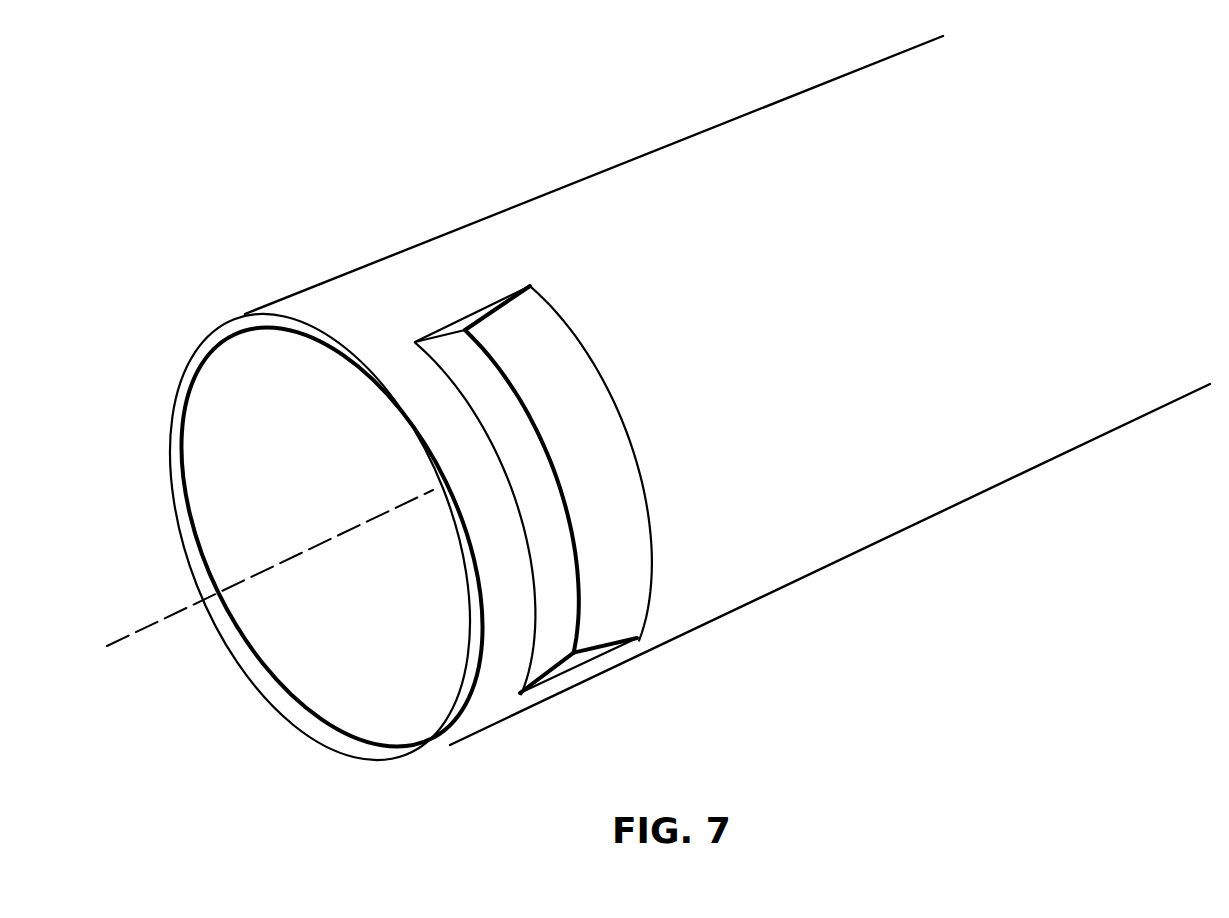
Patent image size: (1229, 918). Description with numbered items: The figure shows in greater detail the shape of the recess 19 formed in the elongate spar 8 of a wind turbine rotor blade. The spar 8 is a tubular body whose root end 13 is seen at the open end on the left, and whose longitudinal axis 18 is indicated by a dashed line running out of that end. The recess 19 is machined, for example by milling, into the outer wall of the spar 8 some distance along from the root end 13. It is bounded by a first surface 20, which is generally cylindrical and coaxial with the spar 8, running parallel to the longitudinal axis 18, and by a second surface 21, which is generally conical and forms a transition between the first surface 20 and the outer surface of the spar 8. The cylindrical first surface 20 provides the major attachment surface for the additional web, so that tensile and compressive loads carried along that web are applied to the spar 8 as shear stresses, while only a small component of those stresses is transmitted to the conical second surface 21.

The spar 8 is at (657, 150).
The root end 13 is at (260, 672).
The longitudinal axis 18 is at (146, 624).
The recess 19 is at (587, 348).
The first surface 20 is at (617, 415).
The second surface 21 is at (490, 428).